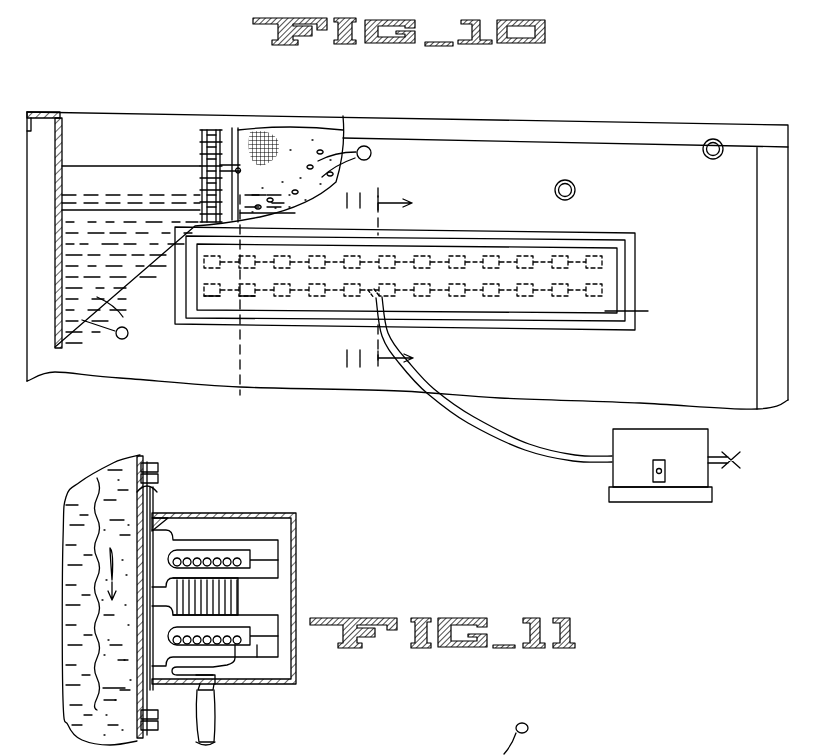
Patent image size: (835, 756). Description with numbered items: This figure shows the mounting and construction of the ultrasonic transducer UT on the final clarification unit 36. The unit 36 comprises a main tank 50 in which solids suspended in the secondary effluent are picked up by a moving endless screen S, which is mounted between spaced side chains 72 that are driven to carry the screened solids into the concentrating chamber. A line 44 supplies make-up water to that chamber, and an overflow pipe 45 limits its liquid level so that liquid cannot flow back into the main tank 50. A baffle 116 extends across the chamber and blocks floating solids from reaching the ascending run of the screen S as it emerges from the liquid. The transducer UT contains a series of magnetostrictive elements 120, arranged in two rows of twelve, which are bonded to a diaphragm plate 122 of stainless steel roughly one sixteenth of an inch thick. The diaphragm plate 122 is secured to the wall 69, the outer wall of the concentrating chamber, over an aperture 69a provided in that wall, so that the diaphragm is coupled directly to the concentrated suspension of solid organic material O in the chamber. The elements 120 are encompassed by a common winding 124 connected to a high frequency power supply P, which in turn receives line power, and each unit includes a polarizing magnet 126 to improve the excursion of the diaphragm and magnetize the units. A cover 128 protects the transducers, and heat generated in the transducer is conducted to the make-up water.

In FIG. 10, the final clarification unit 36 is at (675, 86).
In FIG. 10, the line 44 is at (702, 152).
In FIG. 10, the overflow pipe 45 is at (576, 192).
In FIG. 10, the main tank 50 is at (127, 102).
In FIG. 10, the wall 69 is at (529, 368).
In FIG. 11, the wall 69 is at (143, 728).
In FIG. 11, the aperture 69a is at (153, 490).
In FIG. 10, the side chains 72 is at (202, 153).
In FIG. 10, the baffle 116 is at (81, 168).
In FIG. 10, the magnetostrictive elements 120 is at (455, 257).
In FIG. 11, the magnetostrictive elements 120 is at (218, 540).
In FIG. 10, the diaphragm plate 122 is at (615, 325).
In FIG. 11, the diaphragm plate 122 is at (160, 520).
In FIG. 10, the common winding 124 is at (545, 262).
In FIG. 11, the common winding 124 is at (240, 598).
In FIG. 11, the polarizing magnet 126 is at (272, 559).
In FIG. 10, the cover 128 is at (648, 313).
In FIG. 11, the cover 128 is at (296, 600).
In FIG. 10, the screen S is at (314, 126).
In FIG. 11, the screen S is at (79, 594).
In FIG. 10, the solid organic material O is at (226, 242).
In FIG. 11, the solid organic material O is at (114, 677).
In FIG. 10, the ultrasonic transducer UT is at (626, 241).
In FIG. 11, the ultrasonic transducer UT is at (308, 514).
In FIG. 10, the power supply P is at (607, 426).